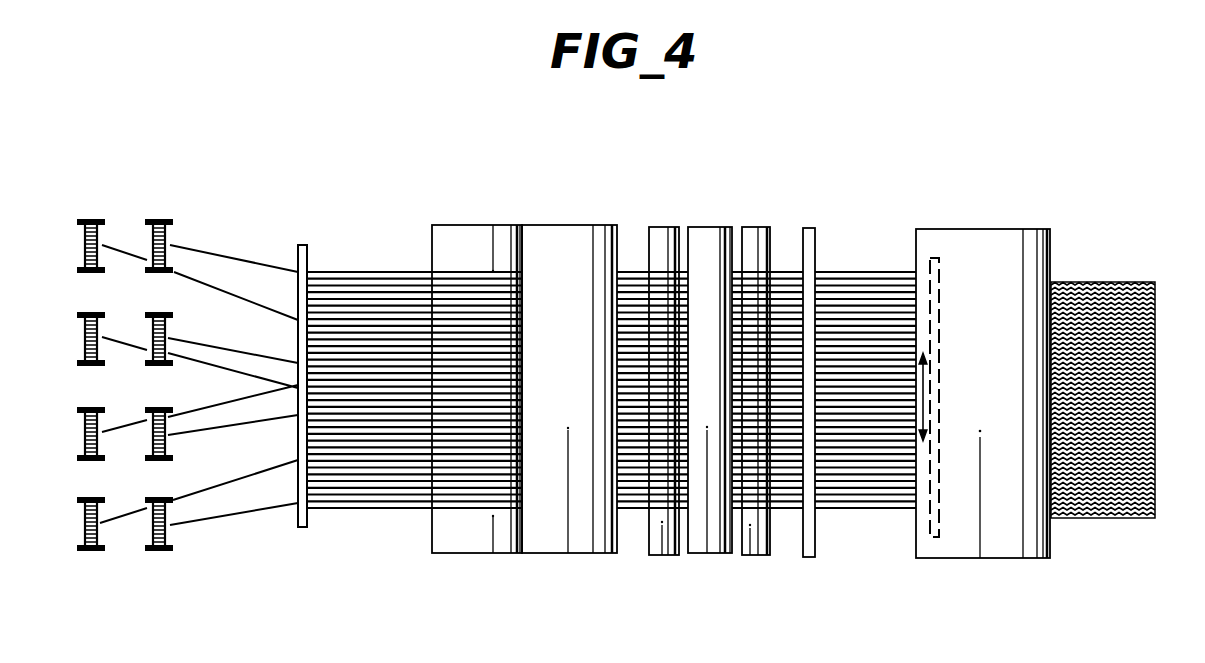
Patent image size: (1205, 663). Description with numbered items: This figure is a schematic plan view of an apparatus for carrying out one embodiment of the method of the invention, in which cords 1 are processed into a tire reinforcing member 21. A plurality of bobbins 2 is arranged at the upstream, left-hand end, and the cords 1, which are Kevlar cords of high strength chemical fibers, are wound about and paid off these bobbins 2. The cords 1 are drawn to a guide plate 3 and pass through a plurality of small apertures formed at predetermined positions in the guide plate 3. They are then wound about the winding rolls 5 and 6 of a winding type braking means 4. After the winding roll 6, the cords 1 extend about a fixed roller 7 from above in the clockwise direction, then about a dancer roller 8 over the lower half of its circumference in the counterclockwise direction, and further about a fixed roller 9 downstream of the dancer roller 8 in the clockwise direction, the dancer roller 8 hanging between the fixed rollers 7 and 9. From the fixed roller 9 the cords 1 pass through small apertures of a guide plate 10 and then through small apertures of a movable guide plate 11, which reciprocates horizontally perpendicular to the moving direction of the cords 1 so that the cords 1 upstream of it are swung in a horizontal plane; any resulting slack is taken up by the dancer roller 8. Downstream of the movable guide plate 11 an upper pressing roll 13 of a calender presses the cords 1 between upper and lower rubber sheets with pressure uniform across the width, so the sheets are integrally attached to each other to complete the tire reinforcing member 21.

The cords 1 is at (238, 258).
The bobbins 2 is at (143, 220).
The guide plate 3 is at (301, 245).
The winding type braking means 4 is at (518, 568).
The winding roll 5 is at (452, 225).
The winding roll 6 is at (586, 225).
The fixed roller 7 is at (662, 227).
The dancer roller 8 is at (708, 227).
The fixed roller 9 is at (755, 227).
The guide plate 10 is at (810, 228).
The movable guide plate 11 is at (936, 258).
The upper pressing roll 13 is at (1020, 229).
The tire reinforcing member 21 is at (1090, 282).